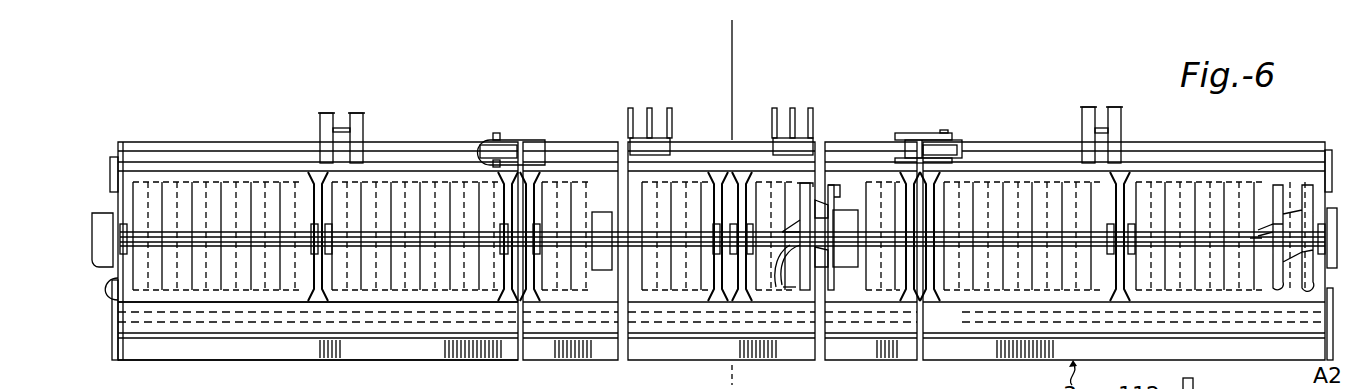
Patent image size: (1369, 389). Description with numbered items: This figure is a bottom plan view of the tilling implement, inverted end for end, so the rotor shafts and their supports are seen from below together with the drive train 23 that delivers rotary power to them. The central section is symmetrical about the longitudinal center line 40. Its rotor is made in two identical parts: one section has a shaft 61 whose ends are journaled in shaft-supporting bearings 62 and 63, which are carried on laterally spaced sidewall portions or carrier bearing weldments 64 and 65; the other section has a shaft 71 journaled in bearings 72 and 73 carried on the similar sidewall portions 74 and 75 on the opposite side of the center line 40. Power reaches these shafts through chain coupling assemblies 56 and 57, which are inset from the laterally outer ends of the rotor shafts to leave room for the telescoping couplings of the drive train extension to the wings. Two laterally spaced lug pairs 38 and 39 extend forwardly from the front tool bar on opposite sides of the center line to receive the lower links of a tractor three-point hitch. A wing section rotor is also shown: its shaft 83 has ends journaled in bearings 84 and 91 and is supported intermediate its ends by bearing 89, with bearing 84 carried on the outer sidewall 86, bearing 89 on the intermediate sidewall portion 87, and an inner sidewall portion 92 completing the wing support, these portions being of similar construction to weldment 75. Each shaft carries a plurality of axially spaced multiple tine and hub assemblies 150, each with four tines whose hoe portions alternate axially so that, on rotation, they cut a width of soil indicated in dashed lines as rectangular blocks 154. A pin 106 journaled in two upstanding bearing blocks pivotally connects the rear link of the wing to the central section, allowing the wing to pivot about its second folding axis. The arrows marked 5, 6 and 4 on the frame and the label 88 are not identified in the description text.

The conveyor frame section 5 is at (130, 362).
The conveyor frame bottom beam 6 is at (318, 362).
The frame section 4 is at (678, 363).
The drive train 23 is at (111, 222).
The shaft 83 is at (170, 233).
The shaft bearing 84 is at (125, 222).
The bearing 89 is at (326, 230).
The shaft-supporting bearing 62 is at (540, 237).
The shaft-supporting bearing 63 is at (717, 242).
The shaft-supporting bearing 72 is at (753, 233).
The intermediate sidewall portion 87 is at (317, 277).
The inner sidewall portion 92 is at (465, 318).
The sidewall portion 64 is at (530, 276).
The shaft 61 is at (701, 233).
The sidewall portion 65 is at (742, 262).
The sidewall portion 75 is at (913, 268).
The slat panel 88 is at (428, 294).
The shaft-supporting bearing 73 is at (897, 220).
The cut width of soil 154 is at (1058, 182).
The lug pair 38 is at (674, 118).
The lug pair 39 is at (776, 118).
The bearing 91 is at (503, 200).
The chain coupling assembly 56 is at (602, 271).
The chain coupling assembly 57 is at (850, 251).
The outer sidewall 86 is at (112, 300).
The pin 106 is at (1310, 386).
The multiple tine and hub assembly 150 is at (837, 183).
The sidewall portion 74 is at (777, 241).
The shaft 71 is at (773, 238).
The longitudinal center line 40 is at (734, 52).